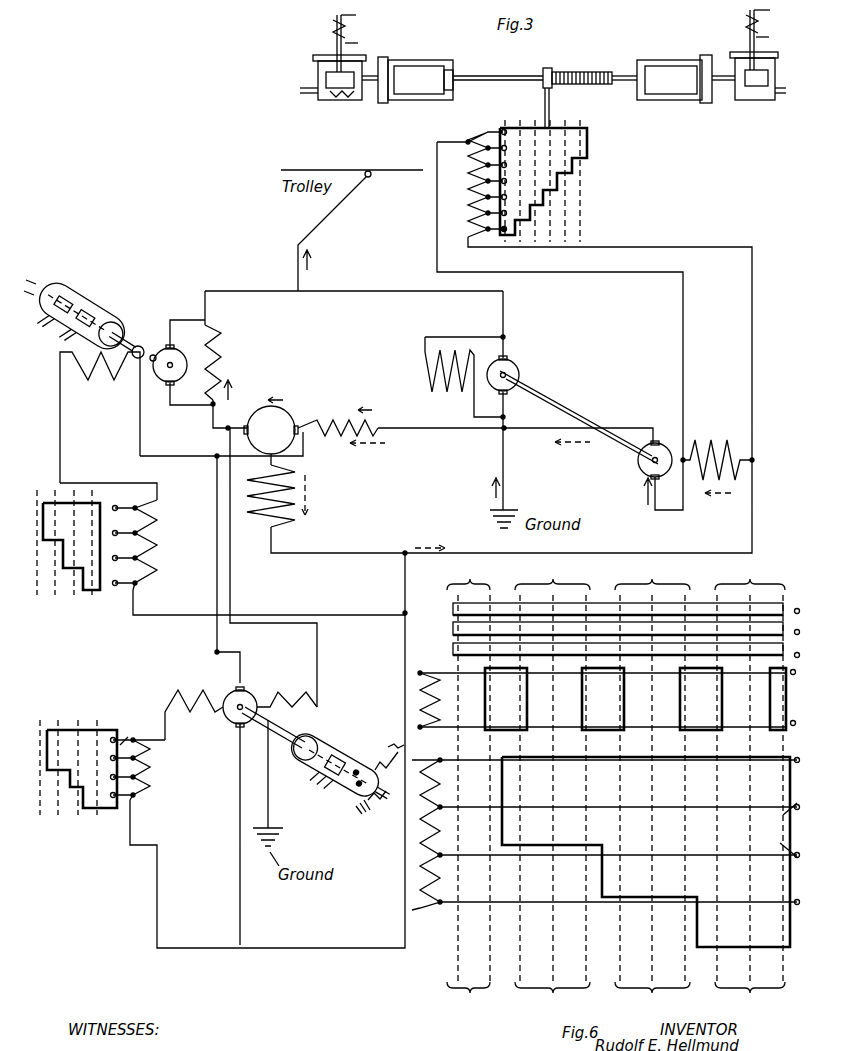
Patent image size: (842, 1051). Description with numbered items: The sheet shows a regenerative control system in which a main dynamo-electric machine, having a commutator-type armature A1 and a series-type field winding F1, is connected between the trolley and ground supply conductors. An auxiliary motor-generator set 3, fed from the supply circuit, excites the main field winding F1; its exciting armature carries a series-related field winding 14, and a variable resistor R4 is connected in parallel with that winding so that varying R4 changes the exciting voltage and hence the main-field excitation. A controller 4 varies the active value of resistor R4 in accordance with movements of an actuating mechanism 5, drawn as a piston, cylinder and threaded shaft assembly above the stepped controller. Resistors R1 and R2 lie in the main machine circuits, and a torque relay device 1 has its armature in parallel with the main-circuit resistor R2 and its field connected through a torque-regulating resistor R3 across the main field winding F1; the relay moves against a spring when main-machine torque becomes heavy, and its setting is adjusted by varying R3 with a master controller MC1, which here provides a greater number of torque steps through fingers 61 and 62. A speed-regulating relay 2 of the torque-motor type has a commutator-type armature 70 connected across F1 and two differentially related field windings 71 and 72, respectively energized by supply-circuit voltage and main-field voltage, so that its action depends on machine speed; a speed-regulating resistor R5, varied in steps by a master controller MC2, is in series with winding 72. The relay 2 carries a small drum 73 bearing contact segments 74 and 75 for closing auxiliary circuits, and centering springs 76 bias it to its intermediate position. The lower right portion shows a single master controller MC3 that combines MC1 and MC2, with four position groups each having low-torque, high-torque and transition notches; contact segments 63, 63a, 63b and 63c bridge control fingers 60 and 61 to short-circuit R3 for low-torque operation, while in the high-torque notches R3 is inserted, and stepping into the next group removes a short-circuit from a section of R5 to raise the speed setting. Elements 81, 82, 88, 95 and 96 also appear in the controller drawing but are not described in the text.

In FIG. 6, the torque relay device 1 is at (124, 303).
In FIG. 6, the speed-regulating relay 2 is at (191, 667).
In FIG. 6, the auxiliary motor-generator set 3 is at (548, 408).
In FIG. 6, the controller 4 is at (615, 180).
In FIG. 3, the actuating mechanism 5 is at (576, 57).
In FIG. 6, the series-related field winding 14 is at (700, 446).
In FIG. 6, the control finger 60 is at (798, 704).
In FIG. 6, the control finger 61 is at (454, 620).
In FIG. 6, the contact 62 is at (110, 575).
In FIG. 6, the contact segment 63 is at (429, 640).
In FIG. 6, the contact segment 63a is at (701, 699).
In FIG. 6, the contact segment 63b is at (603, 699).
In FIG. 6, the contact segment 63c is at (506, 699).
In FIG. 6, the commutator-type armature 70 is at (250, 697).
In FIG. 6, the field winding 71 is at (287, 689).
In FIG. 6, the field winding 72 is at (194, 704).
In FIG. 6, the drum 73 is at (305, 766).
In FIG. 6, the contact segment 74 is at (338, 750).
In FIG. 6, the contact segment 75 is at (383, 762).
In FIG. 6, the centering springs 76 is at (386, 793).
In FIG. 6, the contact bar 81 is at (629, 604).
In FIG. 6, the contact bar 82 is at (629, 625).
In FIG. 6, the contact bar 88 is at (629, 647).
In FIG. 6, the contact segment 95 is at (458, 788).
In FIG. 6, the contact segment 96 is at (423, 848).
In FIG. 6, the resistor R1 is at (338, 420).
In FIG. 6, the main-circuit resistor R2 is at (226, 362).
In FIG. 6, the torque-regulating resistor R3 is at (450, 614).
In FIG. 6, the variable resistor R4 is at (476, 184).
In FIG. 6, the speed-regulating resistor R5 is at (455, 824).
In FIG. 6, the field winding F1 is at (263, 496).
In FIG. 6, the armature A1 is at (271, 430).
In FIG. 6, the master controller MC1 is at (57, 532).
In FIG. 6, the master controller MC2 is at (75, 750).
In FIG. 6, the master controller MC3 is at (614, 783).